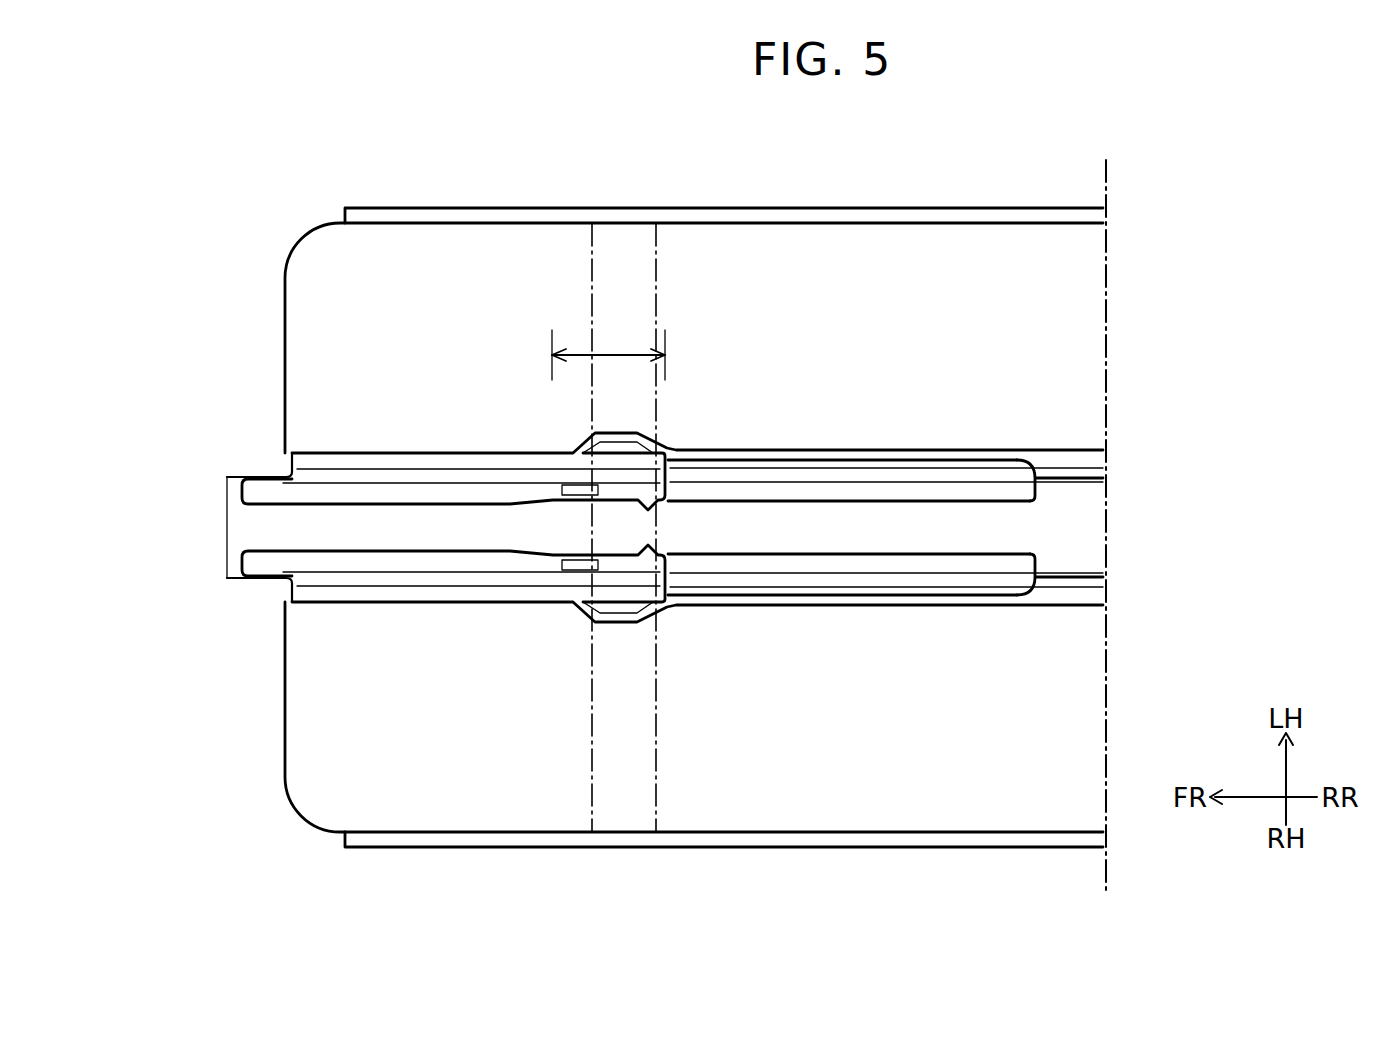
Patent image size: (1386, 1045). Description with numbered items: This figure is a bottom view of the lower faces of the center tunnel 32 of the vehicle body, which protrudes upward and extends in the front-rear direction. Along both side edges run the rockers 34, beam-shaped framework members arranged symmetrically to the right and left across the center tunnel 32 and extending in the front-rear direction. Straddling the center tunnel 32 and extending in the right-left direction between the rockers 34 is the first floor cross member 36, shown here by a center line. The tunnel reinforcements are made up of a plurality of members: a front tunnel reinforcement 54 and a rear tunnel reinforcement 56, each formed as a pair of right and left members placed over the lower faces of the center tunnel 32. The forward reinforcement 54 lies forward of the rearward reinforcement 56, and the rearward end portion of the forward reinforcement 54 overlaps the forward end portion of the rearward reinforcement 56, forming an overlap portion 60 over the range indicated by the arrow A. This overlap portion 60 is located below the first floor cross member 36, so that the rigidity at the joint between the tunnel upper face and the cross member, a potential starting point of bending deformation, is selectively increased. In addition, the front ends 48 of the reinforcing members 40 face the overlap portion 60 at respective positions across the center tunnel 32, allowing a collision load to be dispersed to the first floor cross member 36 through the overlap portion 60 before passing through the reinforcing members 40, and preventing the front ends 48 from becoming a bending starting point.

The center tunnel 32 is at (227, 478).
The rocker 34 is at (778, 208).
The first floor cross member 36 is at (592, 810).
The reinforcing member 40 is at (575, 490).
The front end 48 is at (566, 488).
The front tunnel reinforcement 54 is at (253, 566).
The rear tunnel reinforcement 56 is at (1023, 564).
The overlap portion 60 is at (543, 440).
The arrow A is at (609, 355).